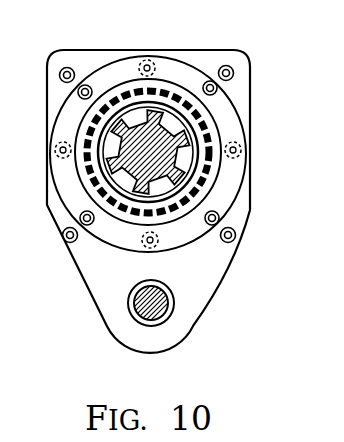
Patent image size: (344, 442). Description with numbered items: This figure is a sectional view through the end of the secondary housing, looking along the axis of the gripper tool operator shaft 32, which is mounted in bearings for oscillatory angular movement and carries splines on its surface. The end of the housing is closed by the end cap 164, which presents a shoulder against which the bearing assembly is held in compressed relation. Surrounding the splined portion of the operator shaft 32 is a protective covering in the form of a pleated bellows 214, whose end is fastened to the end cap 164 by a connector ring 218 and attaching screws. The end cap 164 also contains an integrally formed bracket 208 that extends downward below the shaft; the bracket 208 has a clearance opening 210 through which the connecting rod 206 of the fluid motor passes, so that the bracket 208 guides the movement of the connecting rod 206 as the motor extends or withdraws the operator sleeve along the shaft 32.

The gripper tool operator shaft 32 is at (183, 126).
The end cap 164 is at (247, 90).
The connecting rod 206 is at (150, 317).
The bracket 208 is at (213, 283).
The clearance opening 210 is at (130, 288).
The pleated bellows 214 is at (170, 93).
The connector rings 218 is at (232, 183).